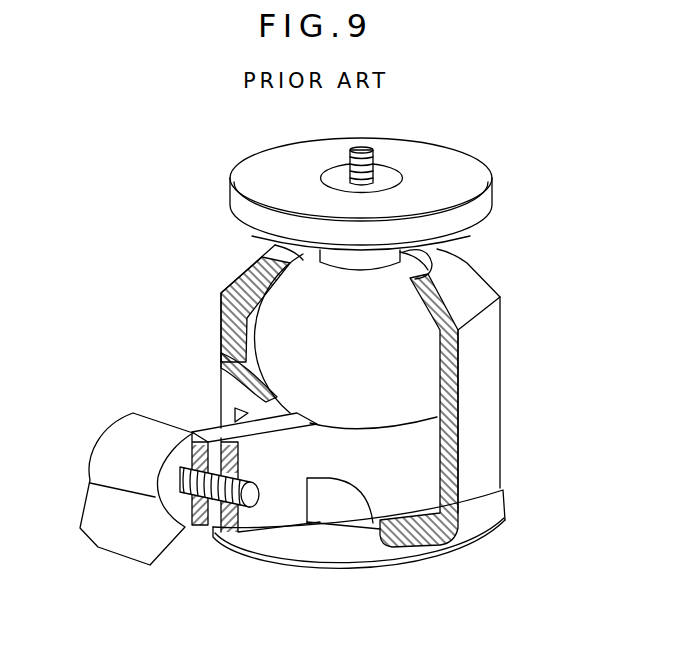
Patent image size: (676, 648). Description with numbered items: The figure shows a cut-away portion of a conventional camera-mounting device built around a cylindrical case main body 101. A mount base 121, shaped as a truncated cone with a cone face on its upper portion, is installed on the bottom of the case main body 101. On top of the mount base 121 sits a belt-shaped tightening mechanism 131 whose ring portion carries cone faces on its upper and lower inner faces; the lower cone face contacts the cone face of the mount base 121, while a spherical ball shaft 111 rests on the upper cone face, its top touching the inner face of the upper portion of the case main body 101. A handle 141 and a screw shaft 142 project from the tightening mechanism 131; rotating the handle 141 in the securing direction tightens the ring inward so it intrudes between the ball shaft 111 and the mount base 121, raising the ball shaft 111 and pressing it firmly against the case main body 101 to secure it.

The case main body 101 is at (480, 370).
The ball shaft 111 is at (390, 323).
The mount base 121 is at (435, 553).
The tightening mechanism 131 is at (410, 465).
The handle 141 is at (123, 455).
The screw shaft 142 is at (252, 506).